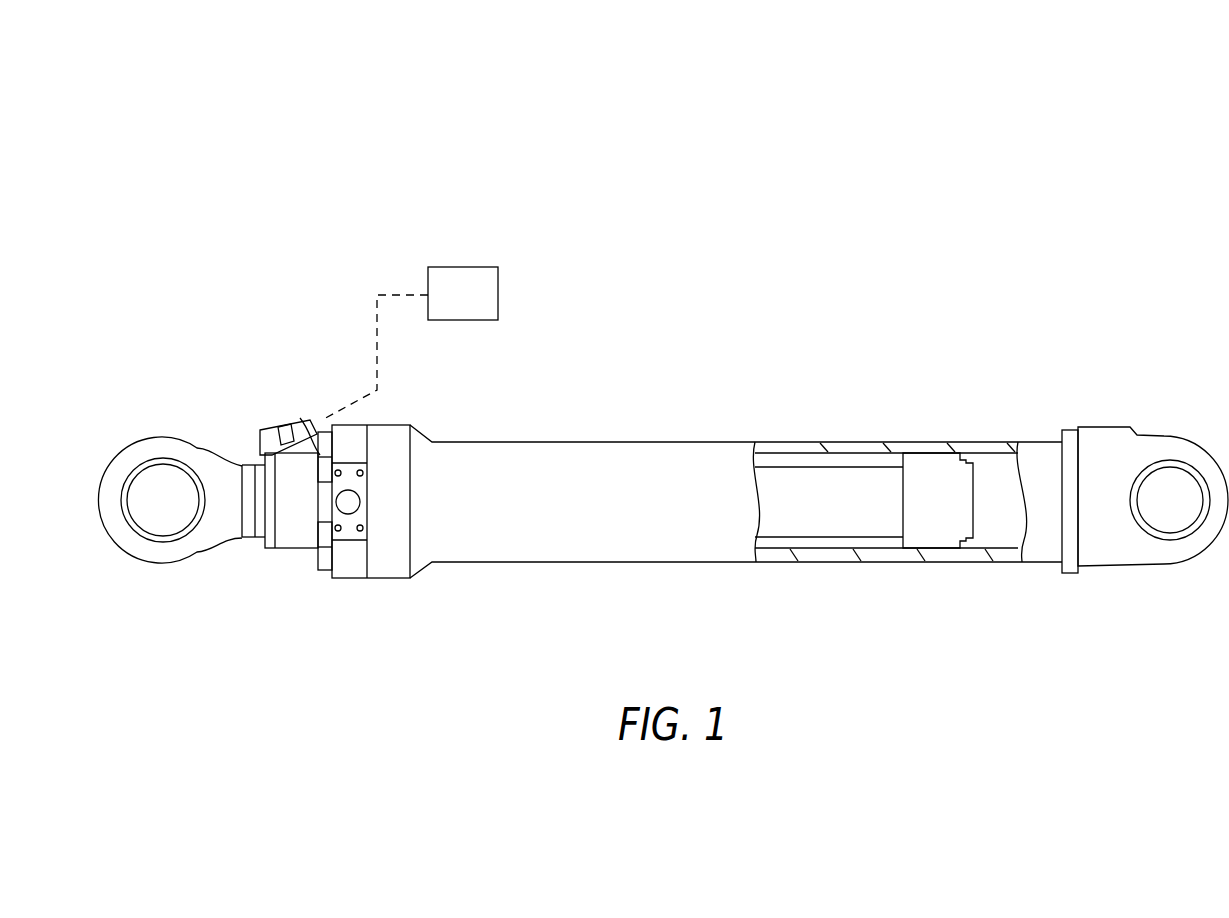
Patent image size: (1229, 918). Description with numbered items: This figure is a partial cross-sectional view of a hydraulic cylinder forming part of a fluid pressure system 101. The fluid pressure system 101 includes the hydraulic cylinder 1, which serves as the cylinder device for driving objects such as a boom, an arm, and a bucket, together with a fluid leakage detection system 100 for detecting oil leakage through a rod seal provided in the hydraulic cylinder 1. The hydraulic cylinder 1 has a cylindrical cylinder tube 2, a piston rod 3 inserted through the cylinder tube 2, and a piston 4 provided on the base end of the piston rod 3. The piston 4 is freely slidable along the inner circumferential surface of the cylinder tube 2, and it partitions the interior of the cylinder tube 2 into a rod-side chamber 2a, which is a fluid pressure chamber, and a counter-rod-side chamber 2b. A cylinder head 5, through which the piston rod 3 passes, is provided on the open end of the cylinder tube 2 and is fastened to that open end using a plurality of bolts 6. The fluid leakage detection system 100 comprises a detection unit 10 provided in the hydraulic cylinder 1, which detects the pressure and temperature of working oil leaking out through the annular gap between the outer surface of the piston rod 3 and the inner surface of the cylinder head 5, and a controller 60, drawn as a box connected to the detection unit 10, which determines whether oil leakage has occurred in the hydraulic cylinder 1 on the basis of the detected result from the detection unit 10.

The fluid pressure system 101 is at (245, 125).
The fluid leakage detection system 100 is at (312, 307).
The controller 60 is at (498, 277).
The detection unit 10 is at (262, 430).
The hydraulic cylinder 1 is at (998, 412).
The cylinder tube 2 is at (657, 472).
The rod-side chamber 2a is at (798, 543).
The counter-rod-side chamber 2b is at (992, 540).
The piston rod 3 is at (833, 500).
The piston 4 is at (934, 468).
The cylinder head 5 is at (292, 525).
The bolts 6 is at (318, 455).